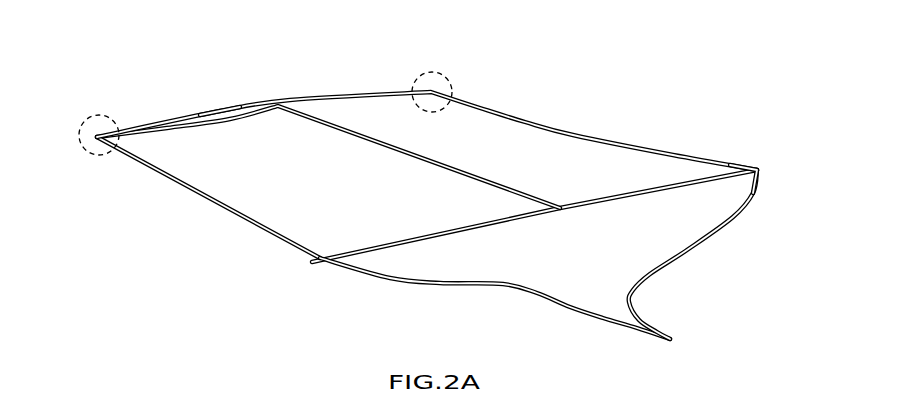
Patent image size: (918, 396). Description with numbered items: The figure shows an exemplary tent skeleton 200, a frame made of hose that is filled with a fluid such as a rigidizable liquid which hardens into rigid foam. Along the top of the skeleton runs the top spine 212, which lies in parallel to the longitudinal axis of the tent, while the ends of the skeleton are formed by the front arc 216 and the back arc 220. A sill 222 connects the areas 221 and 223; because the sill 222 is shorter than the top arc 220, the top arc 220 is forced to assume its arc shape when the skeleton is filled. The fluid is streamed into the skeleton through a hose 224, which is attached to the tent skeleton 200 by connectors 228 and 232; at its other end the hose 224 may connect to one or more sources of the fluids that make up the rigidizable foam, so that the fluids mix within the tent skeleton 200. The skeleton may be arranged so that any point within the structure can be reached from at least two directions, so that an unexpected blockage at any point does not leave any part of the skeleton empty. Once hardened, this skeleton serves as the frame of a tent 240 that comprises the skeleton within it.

The tent skeleton 200 is at (426, 178).
The top spine 212 is at (372, 145).
The front arc 216 is at (592, 207).
The back arc 220 is at (298, 100).
The area 221 is at (96, 115).
The sill 222 is at (218, 112).
The area 223 is at (426, 71).
The hose 224 is at (642, 316).
The connector 228 is at (320, 263).
The connector 232 is at (753, 167).
The tent 240 is at (200, 197).